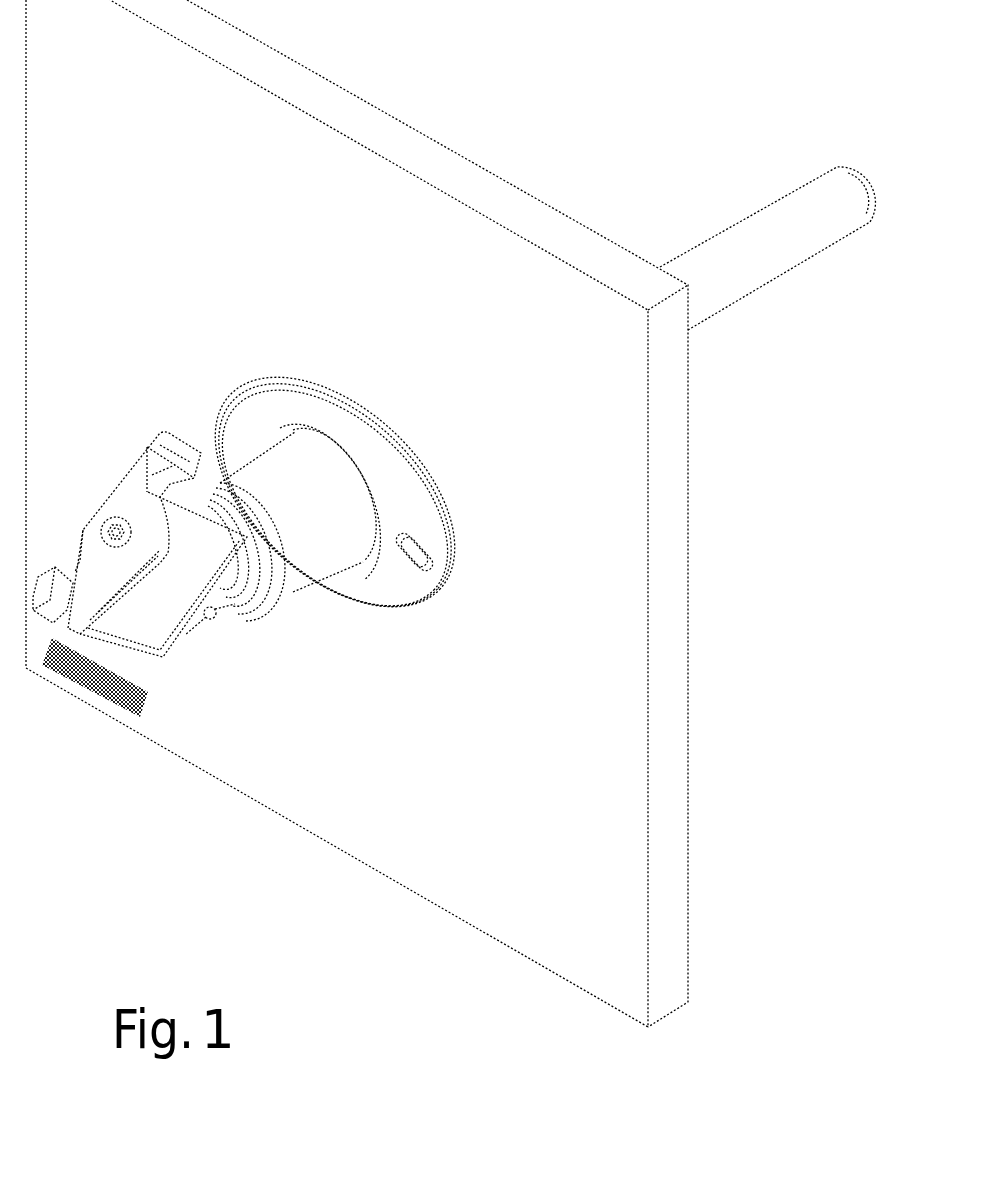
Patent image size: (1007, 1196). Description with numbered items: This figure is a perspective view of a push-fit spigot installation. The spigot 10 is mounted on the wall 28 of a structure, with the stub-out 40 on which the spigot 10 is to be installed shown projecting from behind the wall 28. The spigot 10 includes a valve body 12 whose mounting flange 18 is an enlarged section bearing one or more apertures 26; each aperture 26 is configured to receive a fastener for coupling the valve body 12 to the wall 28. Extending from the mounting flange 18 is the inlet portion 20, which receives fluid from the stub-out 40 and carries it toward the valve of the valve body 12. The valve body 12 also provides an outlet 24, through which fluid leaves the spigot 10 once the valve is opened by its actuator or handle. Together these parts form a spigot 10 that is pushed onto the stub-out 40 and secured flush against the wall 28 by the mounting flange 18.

The spigot 10 is at (100, 395).
The valve body 12 is at (335, 491).
The mounting flange 18 is at (315, 387).
The inlet portion 20 is at (308, 595).
The outlet 24 is at (123, 710).
The aperture 26 is at (417, 563).
The wall 28 is at (272, 208).
The stub-out 40 is at (730, 305).